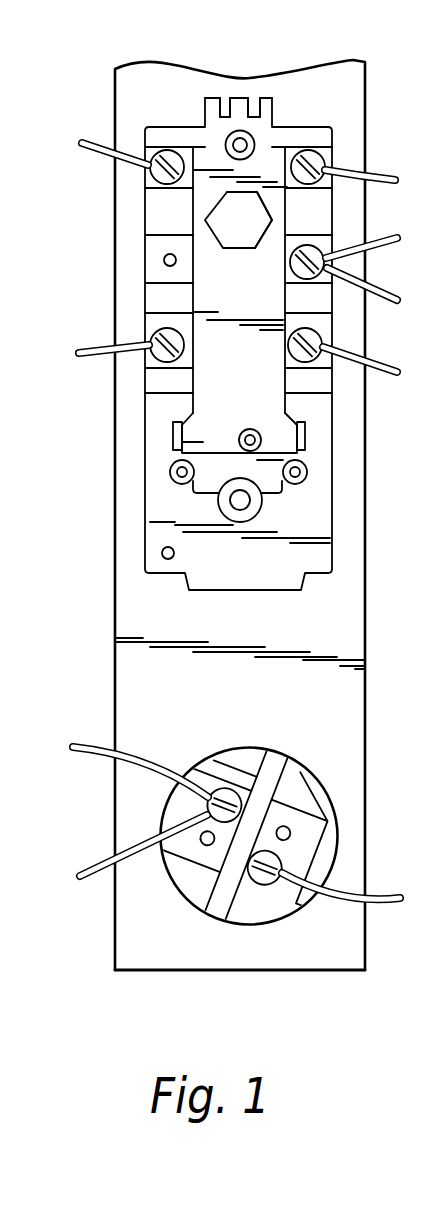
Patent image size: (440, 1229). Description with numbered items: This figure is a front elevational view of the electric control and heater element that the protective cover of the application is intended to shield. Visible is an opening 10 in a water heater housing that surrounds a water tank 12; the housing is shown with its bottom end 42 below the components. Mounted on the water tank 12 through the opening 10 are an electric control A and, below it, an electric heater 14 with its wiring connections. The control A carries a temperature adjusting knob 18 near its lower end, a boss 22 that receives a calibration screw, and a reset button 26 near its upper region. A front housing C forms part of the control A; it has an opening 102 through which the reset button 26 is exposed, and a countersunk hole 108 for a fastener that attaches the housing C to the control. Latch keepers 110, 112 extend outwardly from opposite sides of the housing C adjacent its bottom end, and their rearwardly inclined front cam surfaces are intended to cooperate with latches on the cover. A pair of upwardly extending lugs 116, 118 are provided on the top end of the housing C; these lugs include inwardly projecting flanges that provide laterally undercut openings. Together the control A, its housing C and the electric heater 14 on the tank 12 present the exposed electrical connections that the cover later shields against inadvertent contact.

The opening 10 is at (115, 697).
The water tank 12 is at (132, 600).
The electric heater 14 is at (168, 805).
The temperature adjusting knob 18 is at (258, 511).
The boss 22 is at (250, 427).
The reset button 26 is at (252, 227).
The bottom end 42 is at (295, 971).
The opening 102 is at (223, 229).
The countersunk hole 108 is at (248, 145).
The latch keeper 110 is at (170, 477).
The latch keeper 112 is at (315, 477).
The lug 116 is at (220, 98).
The lug 118 is at (260, 98).
The electric control A is at (143, 447).
The front housing C is at (143, 206).